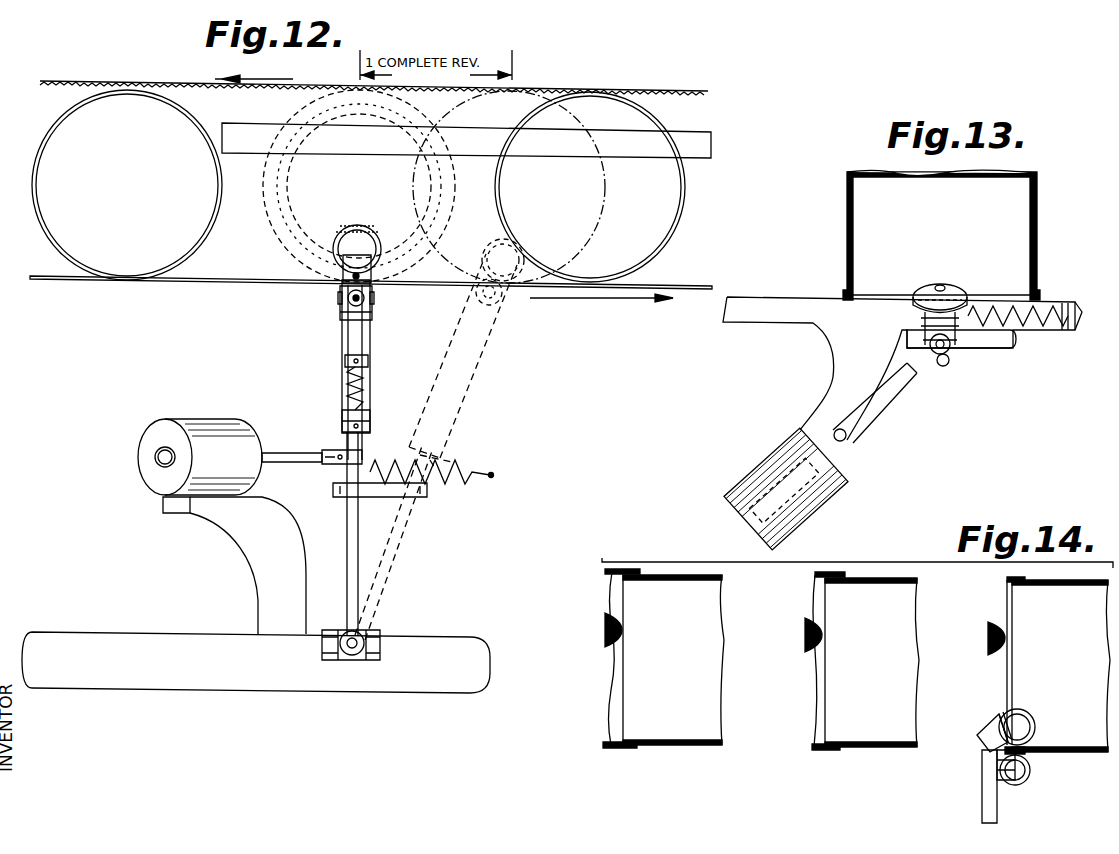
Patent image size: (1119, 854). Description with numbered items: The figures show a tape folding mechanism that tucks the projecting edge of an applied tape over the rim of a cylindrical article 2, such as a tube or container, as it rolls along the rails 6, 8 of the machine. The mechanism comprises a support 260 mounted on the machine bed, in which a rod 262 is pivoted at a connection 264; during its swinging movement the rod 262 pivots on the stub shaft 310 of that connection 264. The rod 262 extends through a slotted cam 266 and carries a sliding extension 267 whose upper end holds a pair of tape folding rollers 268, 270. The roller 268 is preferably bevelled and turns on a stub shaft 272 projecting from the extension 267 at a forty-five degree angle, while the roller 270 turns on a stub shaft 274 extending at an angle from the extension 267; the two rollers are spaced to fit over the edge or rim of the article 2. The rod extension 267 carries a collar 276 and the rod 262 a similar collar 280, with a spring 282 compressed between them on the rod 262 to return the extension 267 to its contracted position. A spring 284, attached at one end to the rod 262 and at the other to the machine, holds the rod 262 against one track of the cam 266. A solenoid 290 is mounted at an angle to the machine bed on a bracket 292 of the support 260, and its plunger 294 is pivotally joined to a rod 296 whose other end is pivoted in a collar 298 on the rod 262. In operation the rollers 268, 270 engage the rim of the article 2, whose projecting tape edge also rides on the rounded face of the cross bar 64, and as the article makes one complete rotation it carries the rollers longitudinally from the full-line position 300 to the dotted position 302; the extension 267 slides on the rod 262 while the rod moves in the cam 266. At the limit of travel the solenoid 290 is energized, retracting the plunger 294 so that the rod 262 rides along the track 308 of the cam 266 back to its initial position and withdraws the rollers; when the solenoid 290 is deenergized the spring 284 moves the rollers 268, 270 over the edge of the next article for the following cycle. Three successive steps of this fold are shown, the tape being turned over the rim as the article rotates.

In FIG. 12, the can 2 is at (132, 197).
In FIG. 13, the can 2 is at (1038, 194).
In FIG. 14, the can 2 is at (884, 583).
In FIG. 12, the saw blade 6 is at (52, 85).
In FIG. 12, the guide rail 8 is at (216, 282).
In FIG. 12, the cross bar 64 is at (712, 144).
In FIG. 14, the cross bar 64 is at (603, 638).
In FIG. 12, the support 260 is at (272, 684).
In FIG. 13, the support 260 is at (752, 312).
In FIG. 12, the rod 262 is at (360, 545).
In FIG. 13, the rod 262 is at (945, 366).
In FIG. 12, the pivot connection 264 is at (360, 637).
In FIG. 12, the slotted cam 266 is at (428, 497).
In FIG. 13, the slotted cam 266 is at (1017, 343).
In FIG. 12, the sliding extension 267 is at (341, 322).
In FIG. 13, the sliding extension 267 is at (962, 343).
In FIG. 14, the sliding extension 267 is at (980, 795).
In FIG. 12, the tape folding roller 268 is at (334, 246).
In FIG. 13, the tape folding roller 268 is at (950, 285).
In FIG. 14, the tape folding roller 268 is at (1012, 712).
In FIG. 12, the tape folding roller 270 is at (375, 297).
In FIG. 14, the tape folding roller 270 is at (1028, 778).
In FIG. 12, the stub shaft 272 is at (350, 276).
In FIG. 13, the stub shaft 272 is at (938, 286).
In FIG. 14, the stub shaft 272 is at (990, 720).
In FIG. 12, the stub shaft 274 is at (372, 306).
In FIG. 14, the stub shaft 274 is at (995, 770).
In FIG. 12, the collar 276 is at (341, 416).
In FIG. 12, the collar 280 is at (344, 358).
In FIG. 12, the spring 282 is at (346, 378).
In FIG. 12, the spring 284 is at (458, 468).
In FIG. 13, the spring 284 is at (1106, 300).
In FIG. 12, the solenoid 290 is at (220, 418).
In FIG. 13, the solenoid 290 is at (755, 458).
In FIG. 12, the bracket 292 is at (256, 556).
In FIG. 13, the bracket 292 is at (830, 360).
In FIG. 12, the plunger 294 is at (152, 462).
In FIG. 13, the plunger 294 is at (798, 428).
In FIG. 12, the rod 296 is at (306, 440).
In FIG. 13, the rod 296 is at (904, 398).
In FIG. 12, the collar 298 is at (338, 449).
In FIG. 12, the full-line position 300 is at (285, 210).
In FIG. 12, the dotted-line position 302 is at (602, 210).
In FIG. 13, the cam track 308 is at (940, 356).
In FIG. 12, the stub shaft 310 is at (382, 640).